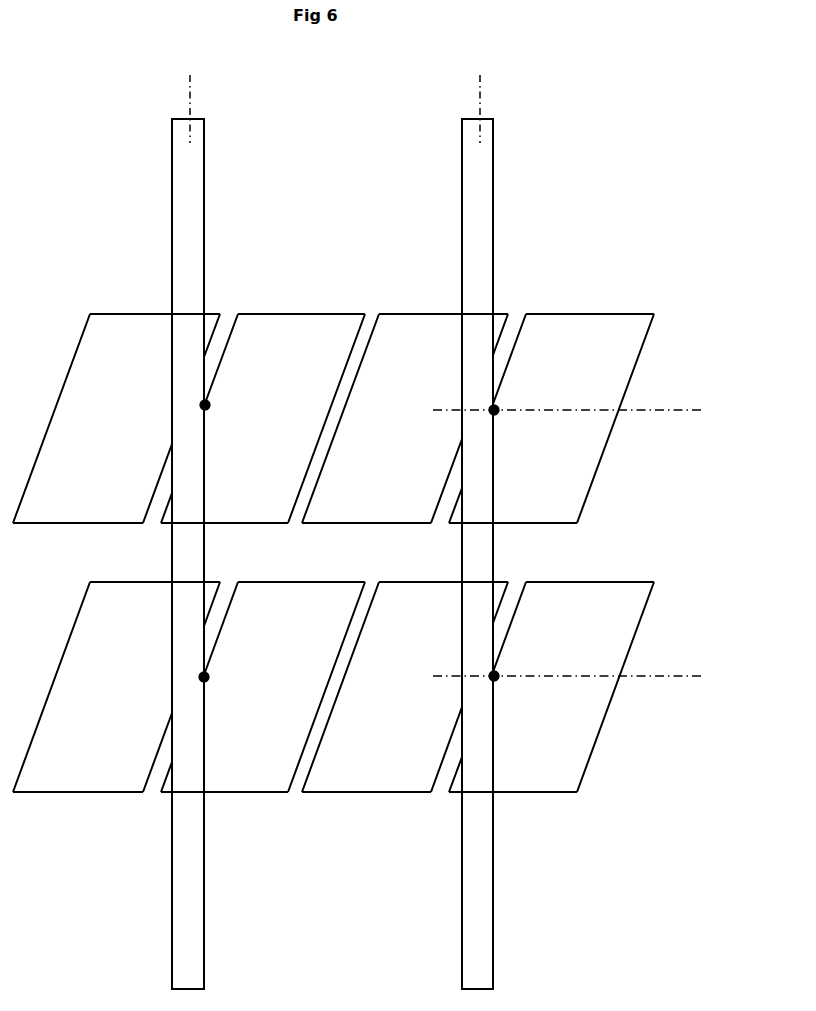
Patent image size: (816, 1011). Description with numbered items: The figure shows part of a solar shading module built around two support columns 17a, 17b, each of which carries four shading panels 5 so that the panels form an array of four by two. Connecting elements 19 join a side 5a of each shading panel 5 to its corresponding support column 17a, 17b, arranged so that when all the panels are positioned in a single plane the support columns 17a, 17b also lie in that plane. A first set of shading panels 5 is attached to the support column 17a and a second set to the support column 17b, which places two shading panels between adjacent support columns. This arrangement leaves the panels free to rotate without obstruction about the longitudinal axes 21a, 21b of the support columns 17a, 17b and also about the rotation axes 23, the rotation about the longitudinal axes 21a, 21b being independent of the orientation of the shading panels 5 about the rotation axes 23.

The shading panel 5 is at (121, 435).
The side of shading panel 5a is at (210, 333).
The support column 17a is at (190, 197).
The support column 17b is at (480, 197).
The connecting element 19 is at (208, 401).
The longitudinal axis 21a is at (190, 90).
The longitudinal axis 21b is at (480, 90).
The rotation axis 23 is at (692, 412).